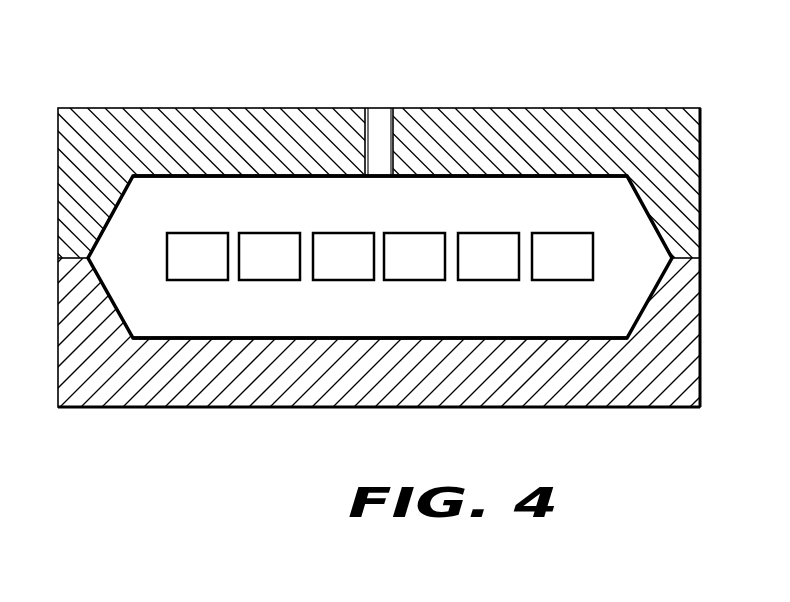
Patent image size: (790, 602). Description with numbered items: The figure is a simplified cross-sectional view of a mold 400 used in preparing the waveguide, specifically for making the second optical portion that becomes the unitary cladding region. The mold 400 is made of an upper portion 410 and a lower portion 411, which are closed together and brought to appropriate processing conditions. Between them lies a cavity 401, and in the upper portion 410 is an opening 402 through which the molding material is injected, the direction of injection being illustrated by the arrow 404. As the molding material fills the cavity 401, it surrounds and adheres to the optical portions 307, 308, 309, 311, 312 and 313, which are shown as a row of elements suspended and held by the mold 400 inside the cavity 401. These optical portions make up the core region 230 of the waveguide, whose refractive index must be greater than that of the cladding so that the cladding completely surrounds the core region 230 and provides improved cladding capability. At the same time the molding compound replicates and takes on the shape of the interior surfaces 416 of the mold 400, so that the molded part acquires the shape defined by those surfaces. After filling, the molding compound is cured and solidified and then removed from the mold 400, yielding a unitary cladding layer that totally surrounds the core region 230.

The mold 400 is at (291, 497).
The cavity 401 is at (436, 211).
The opening 402 is at (385, 106).
The arrow 404 is at (378, 100).
The upper portion 410 is at (155, 108).
The lower portion 411 is at (500, 409).
The interior surfaces 416 is at (160, 178).
The core region 230 is at (541, 299).
The optical portion 307 is at (468, 273).
The optical portion 308 is at (394, 273).
The optical portion 309 is at (323, 273).
The optical portion 311 is at (249, 273).
The optical portion 312 is at (177, 273).
The waveguide core 313 is at (542, 273).